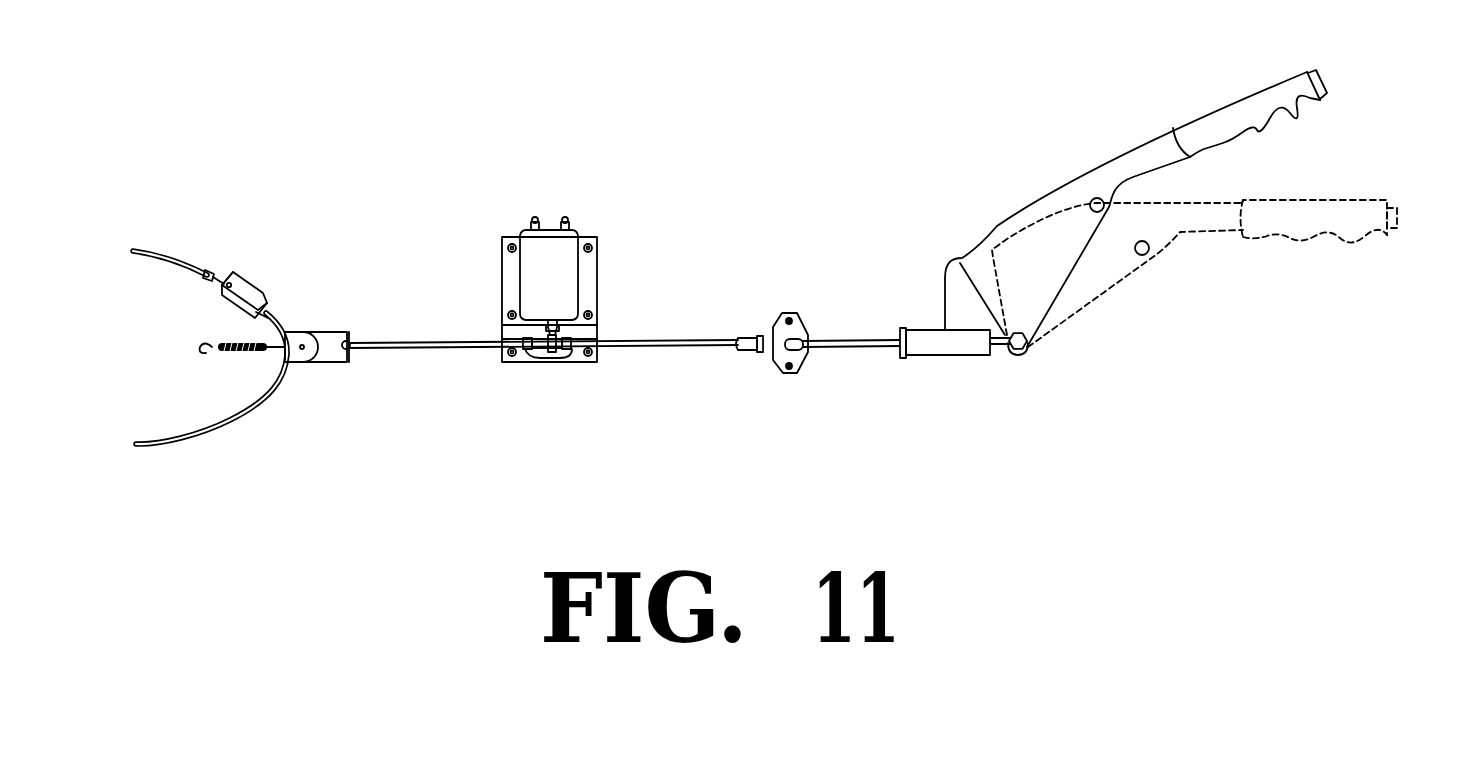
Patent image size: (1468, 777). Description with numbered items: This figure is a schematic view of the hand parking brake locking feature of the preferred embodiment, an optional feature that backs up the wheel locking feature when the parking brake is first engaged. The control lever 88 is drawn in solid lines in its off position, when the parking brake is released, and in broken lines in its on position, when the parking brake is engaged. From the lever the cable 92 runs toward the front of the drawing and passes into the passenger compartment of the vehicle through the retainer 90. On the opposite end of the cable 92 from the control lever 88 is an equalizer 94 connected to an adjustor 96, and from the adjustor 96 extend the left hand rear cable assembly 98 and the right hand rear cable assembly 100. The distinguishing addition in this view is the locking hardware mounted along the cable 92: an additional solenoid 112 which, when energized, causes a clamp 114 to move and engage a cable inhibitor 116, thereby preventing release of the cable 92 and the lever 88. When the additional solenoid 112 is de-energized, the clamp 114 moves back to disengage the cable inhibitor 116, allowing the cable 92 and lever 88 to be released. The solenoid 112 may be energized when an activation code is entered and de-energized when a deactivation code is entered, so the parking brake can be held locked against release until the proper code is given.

The control lever 88 is at (1288, 76).
The retainer 90 is at (790, 317).
The cable 92 is at (378, 341).
The equalizer 94 is at (340, 362).
The adjustor 96 is at (252, 282).
The left hand rear cable assembly 98 is at (165, 255).
The right hand rear cable assembly 100 is at (246, 400).
The additional solenoid 112 is at (575, 226).
The clamp 114 is at (559, 357).
The cable inhibitor 116 is at (541, 358).